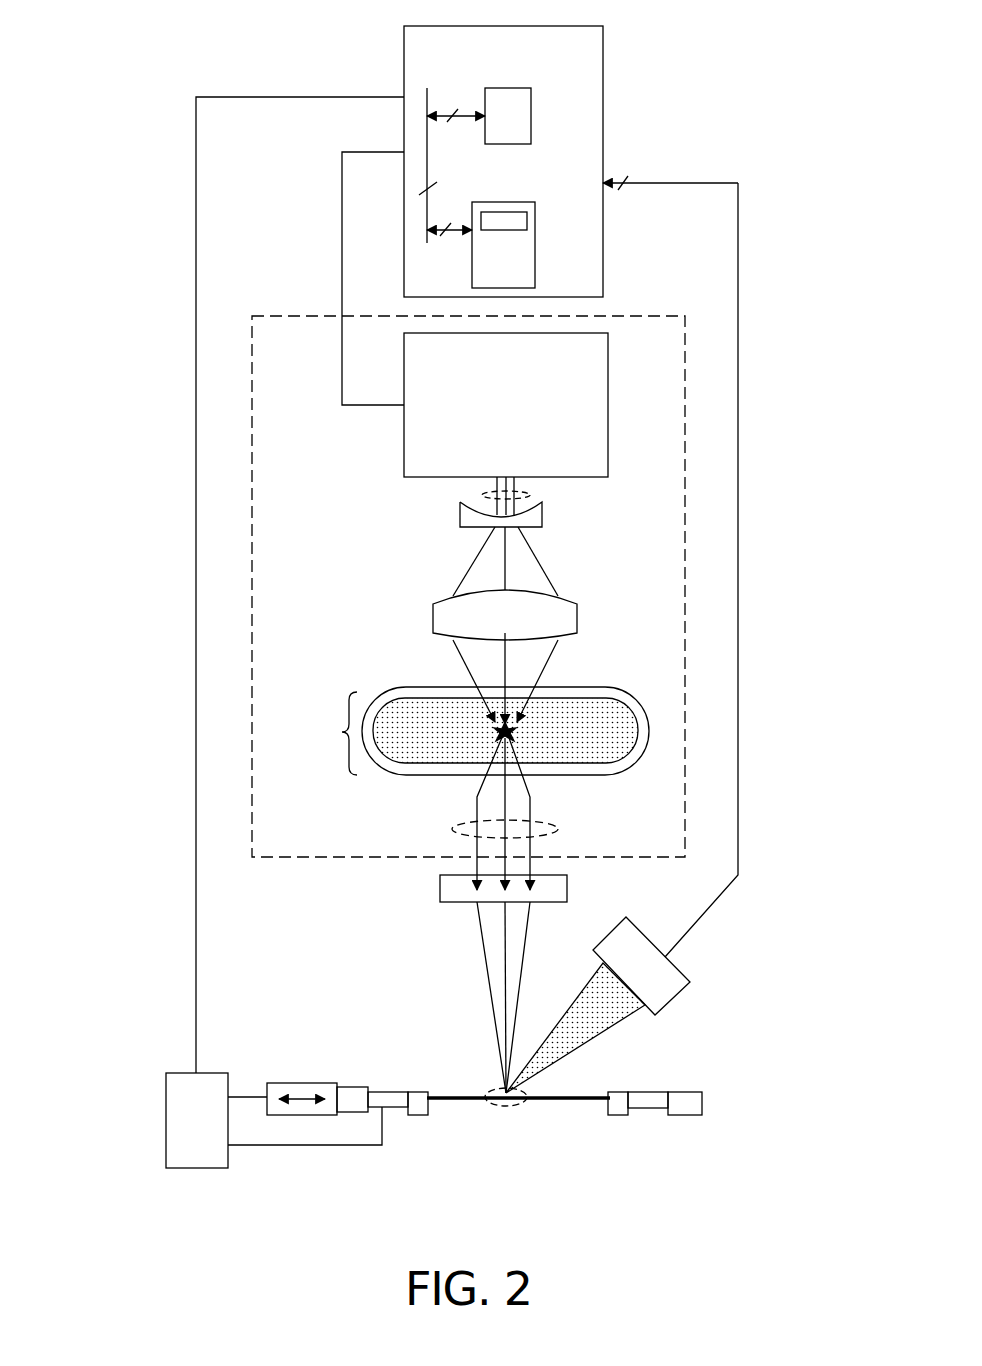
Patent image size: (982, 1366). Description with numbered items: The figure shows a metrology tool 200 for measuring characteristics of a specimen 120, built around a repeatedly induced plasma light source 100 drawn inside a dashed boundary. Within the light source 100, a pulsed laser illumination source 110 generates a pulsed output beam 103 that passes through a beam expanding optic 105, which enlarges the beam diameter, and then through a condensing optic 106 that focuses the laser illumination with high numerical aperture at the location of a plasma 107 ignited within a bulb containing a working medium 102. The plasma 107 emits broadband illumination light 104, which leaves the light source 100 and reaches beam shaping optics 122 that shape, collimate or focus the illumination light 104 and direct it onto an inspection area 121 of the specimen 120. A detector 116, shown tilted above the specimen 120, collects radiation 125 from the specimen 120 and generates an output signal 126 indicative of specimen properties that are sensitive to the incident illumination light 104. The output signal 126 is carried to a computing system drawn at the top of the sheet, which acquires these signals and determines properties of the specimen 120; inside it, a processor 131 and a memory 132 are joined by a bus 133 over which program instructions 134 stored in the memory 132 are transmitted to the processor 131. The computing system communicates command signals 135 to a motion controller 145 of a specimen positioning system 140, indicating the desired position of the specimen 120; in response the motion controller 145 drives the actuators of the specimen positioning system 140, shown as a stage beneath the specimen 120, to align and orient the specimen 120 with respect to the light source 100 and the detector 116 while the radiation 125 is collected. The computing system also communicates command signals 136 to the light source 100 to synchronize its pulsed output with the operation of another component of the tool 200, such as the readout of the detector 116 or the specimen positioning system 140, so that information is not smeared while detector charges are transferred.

The metrology tool 200 is at (88, 98).
The processor 131 is at (531, 116).
The memory 132 is at (472, 275).
The bus 133 is at (428, 160).
The program instructions 134 is at (527, 221).
The output signal 126 is at (644, 170).
The command signals 135 is at (183, 178).
The command signals 136 is at (327, 178).
The repeatedly induced plasma light source 100 is at (268, 315).
The pulsed laser illumination source 110 is at (487, 459).
The pulsed output beam 103 is at (530, 496).
The beam expanding optic 105 is at (460, 511).
The condensing optic 106 is at (433, 612).
The plasma 107 is at (498, 726).
The working medium 102 is at (584, 744).
The illumination light 104 is at (452, 831).
The beam shaping optics 122 is at (440, 889).
The detector 116 is at (657, 977).
The radiation 125 is at (620, 1012).
The inspection area 121 is at (523, 1093).
The specimen 120 is at (562, 1103).
The specimen positioning system 140 is at (363, 1080).
The motion controller 145 is at (181, 1129).